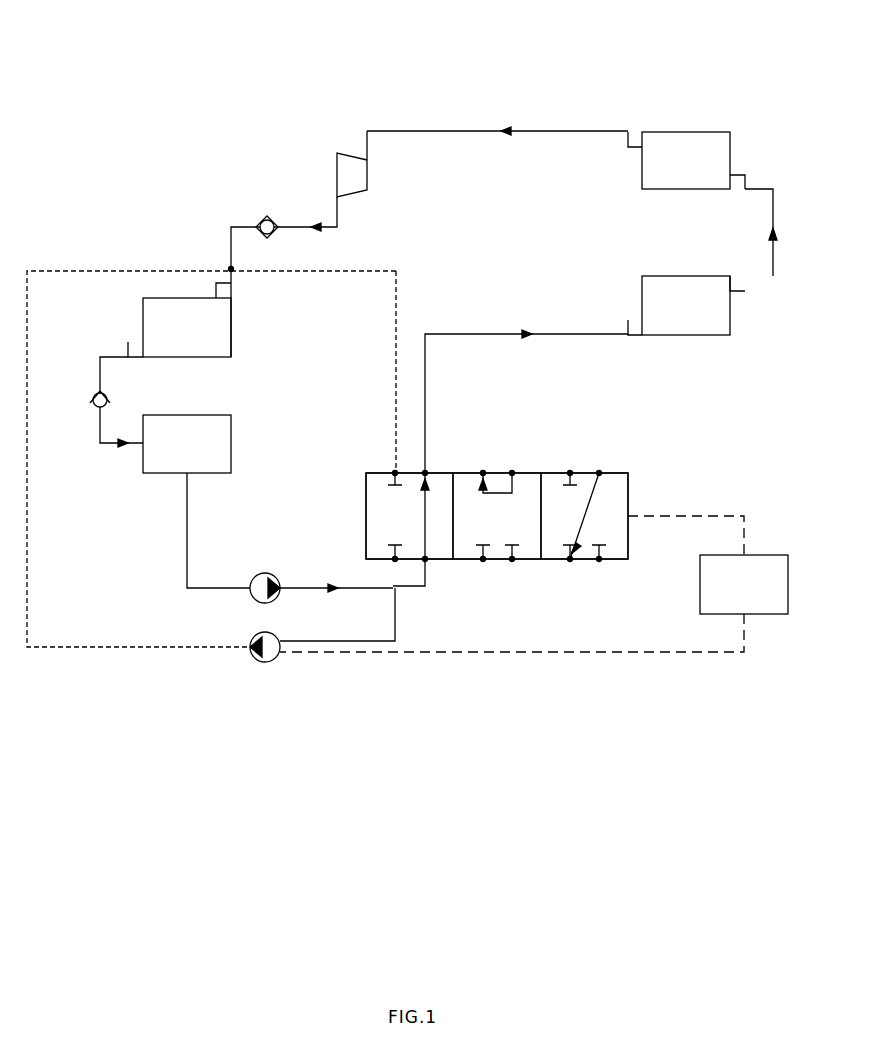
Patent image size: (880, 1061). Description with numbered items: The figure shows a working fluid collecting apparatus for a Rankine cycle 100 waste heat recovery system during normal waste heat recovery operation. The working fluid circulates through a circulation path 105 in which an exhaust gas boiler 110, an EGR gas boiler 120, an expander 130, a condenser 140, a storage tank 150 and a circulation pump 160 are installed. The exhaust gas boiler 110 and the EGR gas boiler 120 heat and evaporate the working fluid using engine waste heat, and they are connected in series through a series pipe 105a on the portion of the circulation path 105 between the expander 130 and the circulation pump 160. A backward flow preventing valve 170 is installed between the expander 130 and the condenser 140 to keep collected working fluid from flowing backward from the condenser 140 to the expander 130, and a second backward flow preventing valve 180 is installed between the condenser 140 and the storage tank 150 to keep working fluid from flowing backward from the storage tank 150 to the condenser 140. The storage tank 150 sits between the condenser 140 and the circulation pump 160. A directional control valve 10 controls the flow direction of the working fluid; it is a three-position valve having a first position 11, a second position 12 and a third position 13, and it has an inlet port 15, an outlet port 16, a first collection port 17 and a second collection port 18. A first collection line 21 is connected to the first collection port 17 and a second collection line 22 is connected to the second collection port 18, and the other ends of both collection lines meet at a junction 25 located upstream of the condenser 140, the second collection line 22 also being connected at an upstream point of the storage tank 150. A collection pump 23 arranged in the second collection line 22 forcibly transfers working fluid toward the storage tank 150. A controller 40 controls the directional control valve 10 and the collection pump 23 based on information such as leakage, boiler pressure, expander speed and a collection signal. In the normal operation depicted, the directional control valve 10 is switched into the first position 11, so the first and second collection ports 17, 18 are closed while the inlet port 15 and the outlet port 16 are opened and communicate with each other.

The Rankine cycle 100 is at (490, 35).
The circulation path 105 is at (397, 131).
The series pipe 105a is at (775, 195).
The exhaust gas boiler 110 is at (730, 299).
The EGR gas boiler 120 is at (730, 152).
The expander 130 is at (367, 170).
The backward flow preventing valve 170 is at (260, 218).
The junction 25 is at (232, 268).
The first collection line 21 is at (397, 275).
The condenser 140 is at (231, 321).
The backward flow preventing valve 180 is at (108, 390).
The storage tank 150 is at (231, 438).
The pump 160 is at (263, 573).
The second collection line 22 is at (160, 648).
The collection pump 23 is at (265, 662).
The controller 40 is at (770, 555).
The directional control valve 10 is at (643, 438).
The first position 11 is at (366, 518).
The second position 12 is at (534, 473).
The third position 13 is at (628, 481).
The inlet port 15 is at (427, 561).
The outlet port 16 is at (430, 473).
The first collection port 17 is at (395, 473).
The second collection port 18 is at (393, 561).